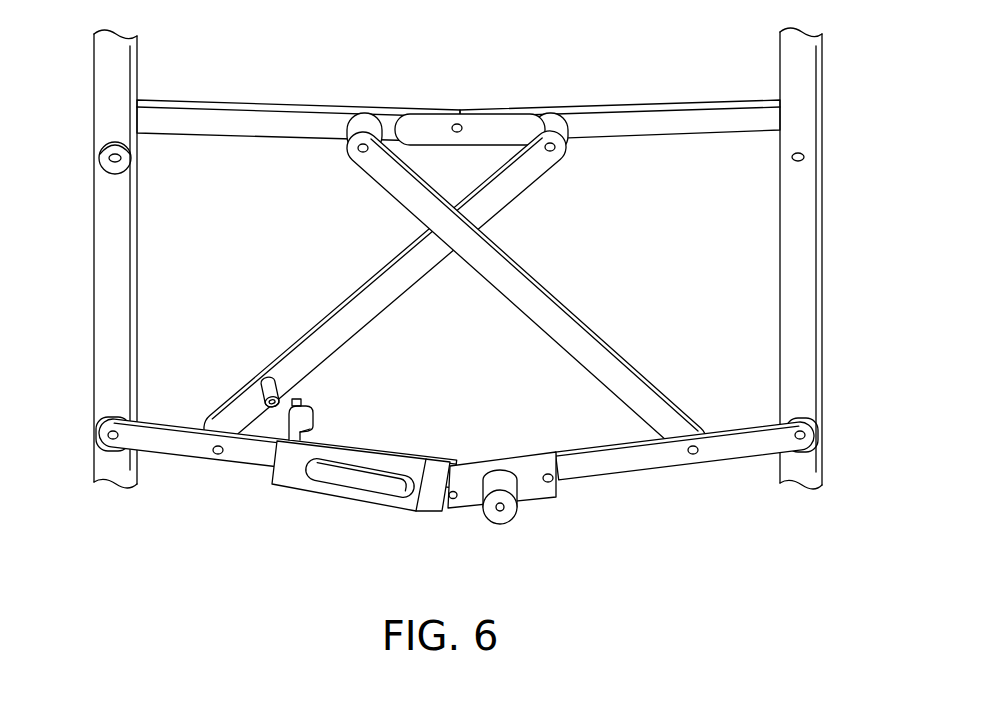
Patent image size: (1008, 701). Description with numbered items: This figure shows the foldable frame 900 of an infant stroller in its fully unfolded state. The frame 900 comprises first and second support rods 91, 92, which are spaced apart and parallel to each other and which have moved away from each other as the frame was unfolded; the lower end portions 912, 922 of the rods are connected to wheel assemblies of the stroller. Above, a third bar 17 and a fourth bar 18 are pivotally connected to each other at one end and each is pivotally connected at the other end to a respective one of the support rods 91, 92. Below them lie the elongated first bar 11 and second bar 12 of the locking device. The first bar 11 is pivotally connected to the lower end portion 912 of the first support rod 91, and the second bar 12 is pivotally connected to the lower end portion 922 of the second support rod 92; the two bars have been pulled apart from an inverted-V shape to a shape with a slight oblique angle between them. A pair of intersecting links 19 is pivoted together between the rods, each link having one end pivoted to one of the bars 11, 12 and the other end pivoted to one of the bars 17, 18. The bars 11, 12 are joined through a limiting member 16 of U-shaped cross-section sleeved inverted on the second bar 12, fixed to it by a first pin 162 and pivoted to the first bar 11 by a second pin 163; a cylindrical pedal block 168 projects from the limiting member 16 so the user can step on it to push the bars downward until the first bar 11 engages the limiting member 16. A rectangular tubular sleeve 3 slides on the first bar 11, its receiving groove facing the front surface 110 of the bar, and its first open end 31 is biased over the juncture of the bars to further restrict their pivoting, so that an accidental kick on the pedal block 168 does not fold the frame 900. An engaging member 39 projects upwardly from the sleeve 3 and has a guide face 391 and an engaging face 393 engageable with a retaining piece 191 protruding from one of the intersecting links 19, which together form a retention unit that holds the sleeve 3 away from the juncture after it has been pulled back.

The foldable frame 900 is at (832, 124).
The first support rod 91 is at (96, 103).
The second support rod 92 is at (780, 75).
The lower end portion 912 is at (110, 400).
The lower end portion 922 is at (790, 382).
The third bar 17 is at (220, 108).
The fourth bar 18 is at (585, 108).
The intersecting links 19 is at (497, 268).
The retaining piece 191 is at (262, 385).
The first bar 11 is at (165, 452).
The front surface 110 is at (262, 460).
The second bar 12 is at (658, 466).
The limiting member 16 is at (525, 463).
The first pin 162 is at (556, 488).
The second pin 163 is at (453, 500).
The pedal block 168 is at (510, 514).
The sleeve 3 is at (361, 502).
The first open end 31 is at (420, 515).
The engaging member 39 is at (334, 403).
The guide face 391 is at (300, 398).
The engaging face 393 is at (310, 405).